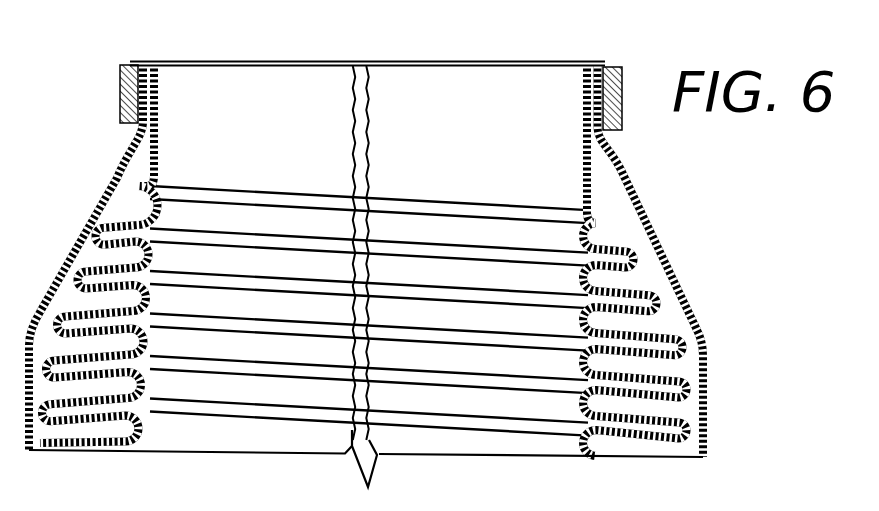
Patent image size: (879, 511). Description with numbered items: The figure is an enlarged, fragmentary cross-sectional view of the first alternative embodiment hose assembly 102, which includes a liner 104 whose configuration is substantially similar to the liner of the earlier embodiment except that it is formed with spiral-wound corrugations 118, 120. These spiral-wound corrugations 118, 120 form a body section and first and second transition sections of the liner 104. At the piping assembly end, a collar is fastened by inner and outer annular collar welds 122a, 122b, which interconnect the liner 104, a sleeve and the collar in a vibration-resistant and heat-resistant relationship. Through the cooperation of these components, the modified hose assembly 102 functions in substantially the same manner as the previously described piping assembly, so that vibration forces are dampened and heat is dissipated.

The hose assembly 102 is at (96, 92).
The liner 104 is at (665, 462).
The spiral-wound corrugation 118 is at (706, 448).
The spiral-wound corrugation 120 is at (696, 318).
The inner annular collar weld 122a is at (612, 131).
The outer annular collar weld 122b is at (598, 60).